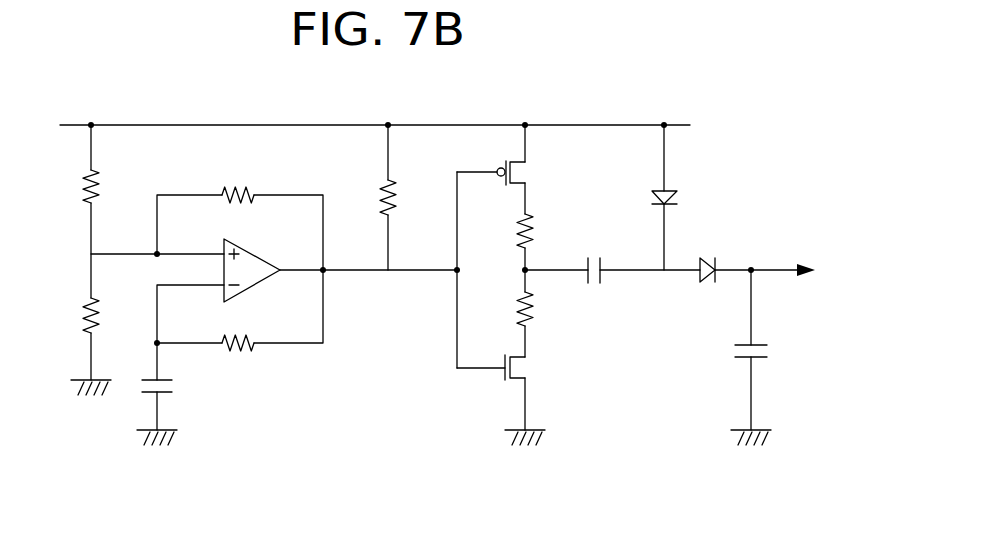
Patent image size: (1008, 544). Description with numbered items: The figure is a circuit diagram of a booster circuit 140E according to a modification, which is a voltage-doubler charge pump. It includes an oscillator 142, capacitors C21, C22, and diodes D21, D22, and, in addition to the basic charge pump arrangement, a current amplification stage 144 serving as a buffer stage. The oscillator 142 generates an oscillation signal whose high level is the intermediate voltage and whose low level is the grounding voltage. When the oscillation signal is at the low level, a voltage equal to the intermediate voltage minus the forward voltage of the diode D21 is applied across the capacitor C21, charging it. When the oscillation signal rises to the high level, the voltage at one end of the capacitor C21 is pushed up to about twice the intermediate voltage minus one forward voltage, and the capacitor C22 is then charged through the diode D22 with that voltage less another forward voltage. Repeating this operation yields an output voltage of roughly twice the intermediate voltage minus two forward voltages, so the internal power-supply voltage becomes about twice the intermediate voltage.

The booster circuit 140E is at (705, 102).
The oscillator 142 is at (342, 455).
The current amplification stage 144 is at (557, 455).
The capacitor C21 is at (593, 290).
The capacitor C22 is at (733, 352).
The diode D21 is at (678, 198).
The diode D22 is at (710, 285).